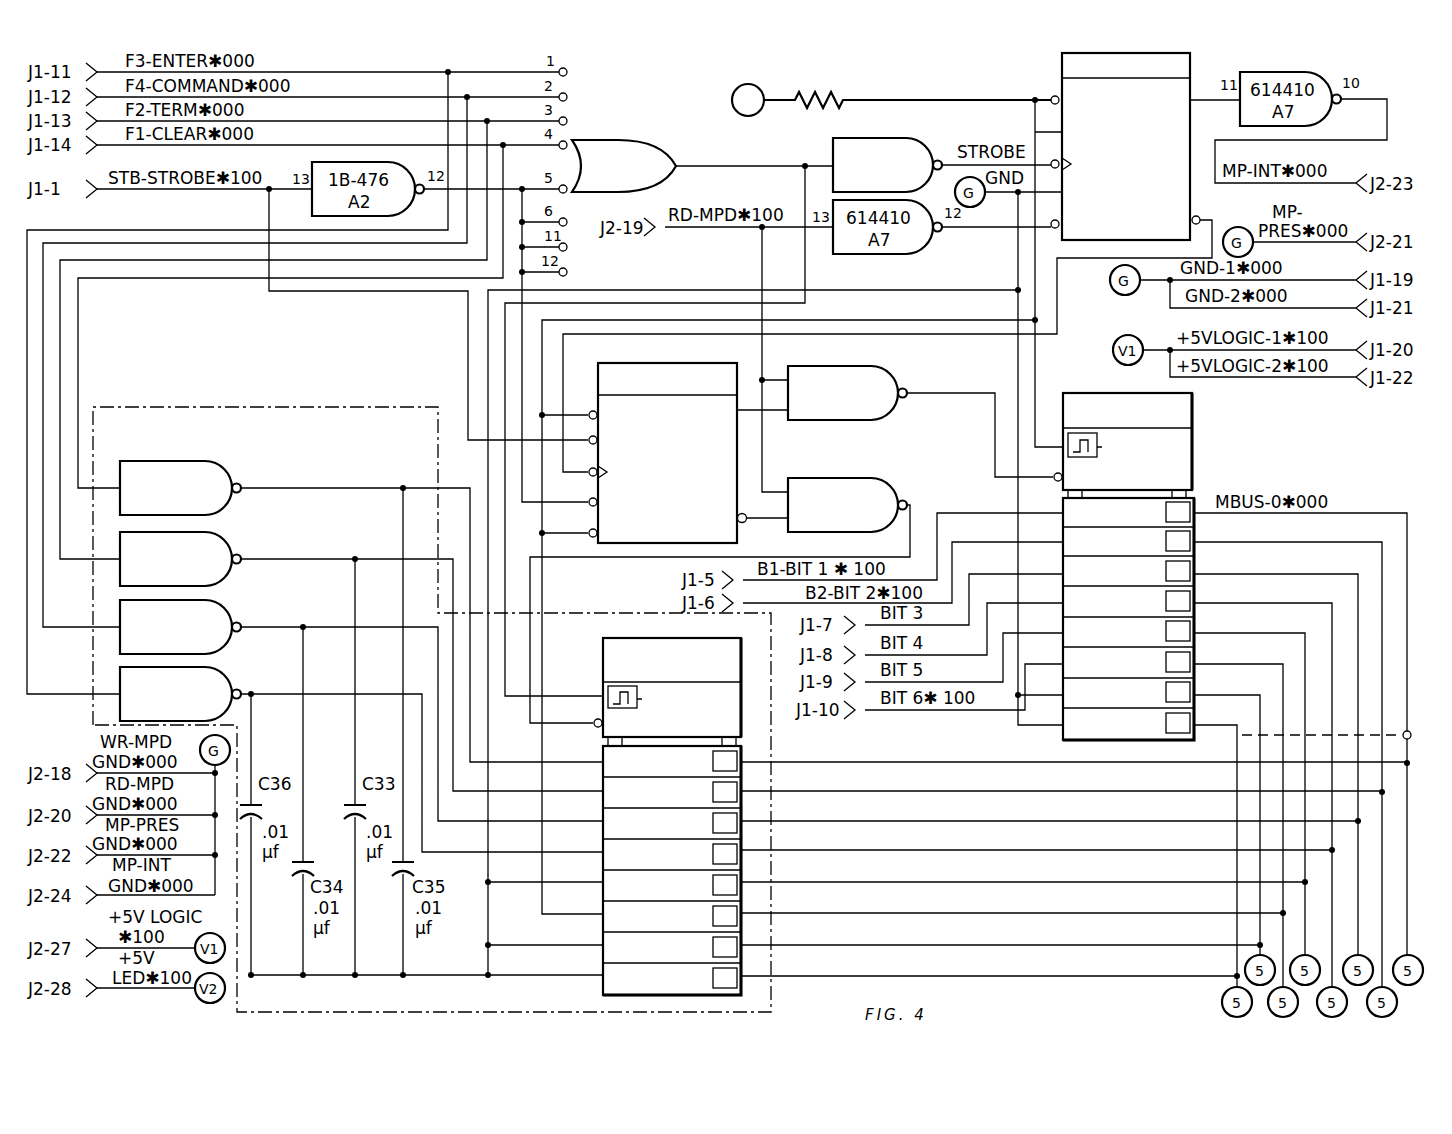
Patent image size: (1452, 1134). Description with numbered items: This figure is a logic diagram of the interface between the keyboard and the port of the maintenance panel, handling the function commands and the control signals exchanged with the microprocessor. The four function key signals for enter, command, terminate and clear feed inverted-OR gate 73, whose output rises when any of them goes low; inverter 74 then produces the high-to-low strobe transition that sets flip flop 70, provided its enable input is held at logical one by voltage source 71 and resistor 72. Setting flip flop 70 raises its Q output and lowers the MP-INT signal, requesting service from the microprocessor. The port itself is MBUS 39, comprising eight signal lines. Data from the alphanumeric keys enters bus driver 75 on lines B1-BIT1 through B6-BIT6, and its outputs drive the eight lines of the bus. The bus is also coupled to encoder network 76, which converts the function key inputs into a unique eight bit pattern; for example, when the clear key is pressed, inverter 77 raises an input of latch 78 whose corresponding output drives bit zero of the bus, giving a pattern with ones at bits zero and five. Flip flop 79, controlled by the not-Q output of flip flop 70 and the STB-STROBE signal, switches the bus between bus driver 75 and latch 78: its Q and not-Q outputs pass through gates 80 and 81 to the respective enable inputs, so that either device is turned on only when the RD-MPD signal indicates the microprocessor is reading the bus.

The flip flop 70 is at (1062, 56).
The voltage source 71 is at (740, 88).
The resistor 72 is at (844, 94).
The inverted-OR gate 73 is at (622, 140).
The inverter 74 is at (884, 138).
The bus driver 75 is at (1193, 412).
The encoder network 76 is at (338, 407).
The inverter 77 is at (196, 461).
The latch 78 is at (603, 652).
The flip flop 79 is at (686, 363).
The gate 80 is at (882, 370).
The NAND gate 81 is at (884, 478).
The MBUS 39 is at (1236, 736).